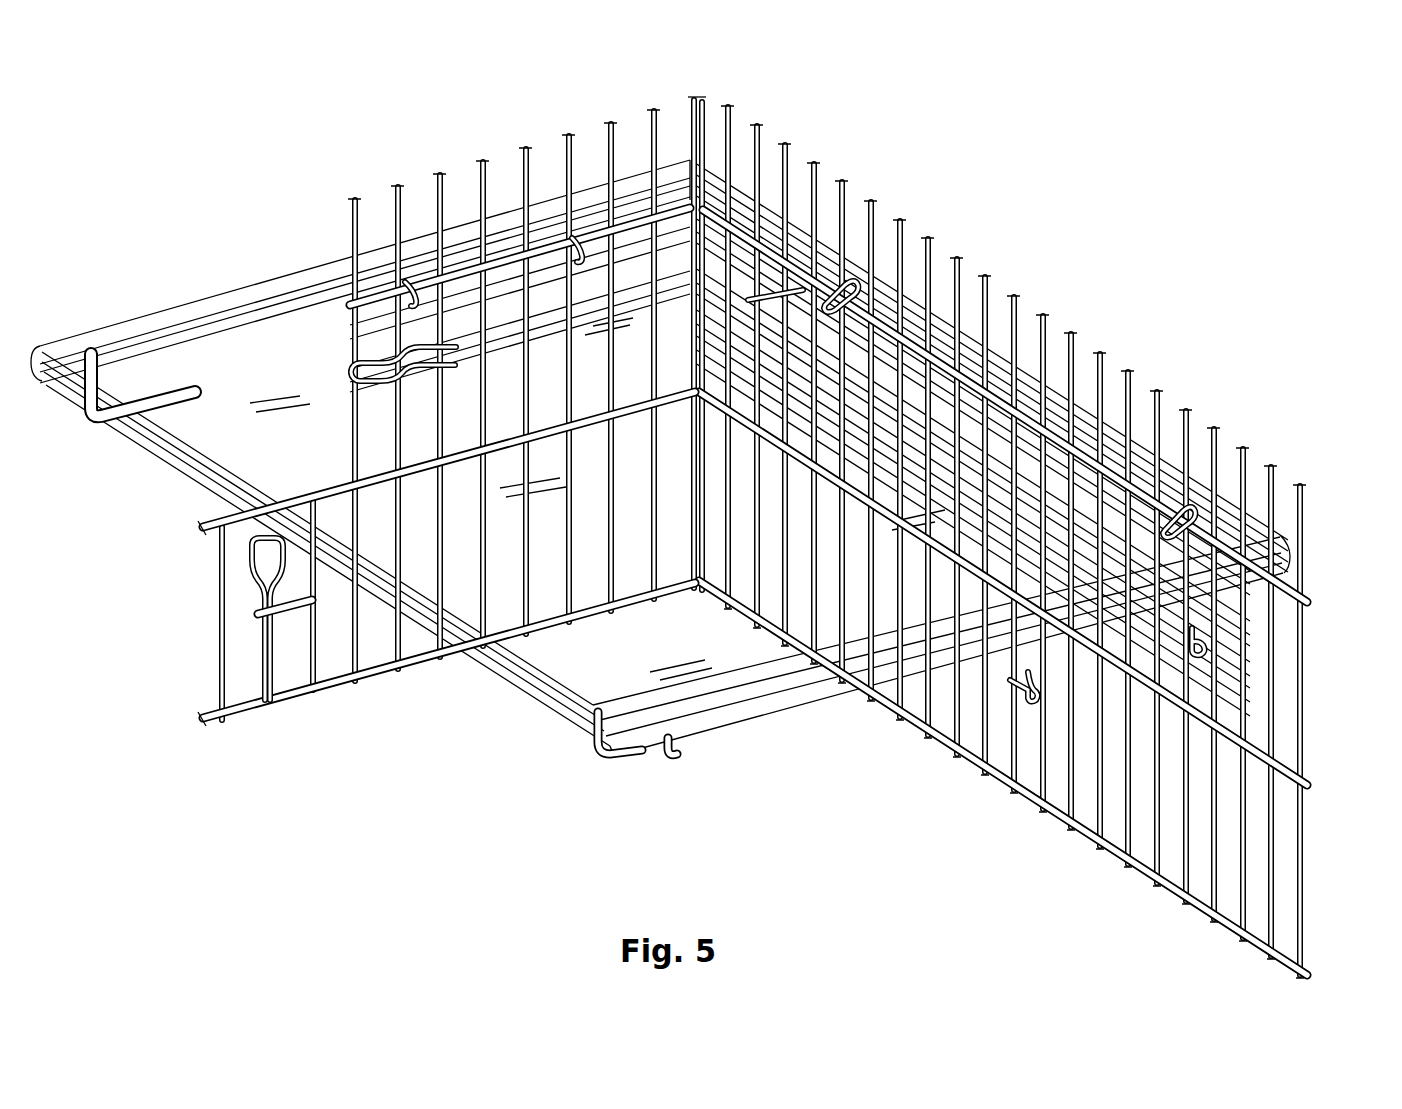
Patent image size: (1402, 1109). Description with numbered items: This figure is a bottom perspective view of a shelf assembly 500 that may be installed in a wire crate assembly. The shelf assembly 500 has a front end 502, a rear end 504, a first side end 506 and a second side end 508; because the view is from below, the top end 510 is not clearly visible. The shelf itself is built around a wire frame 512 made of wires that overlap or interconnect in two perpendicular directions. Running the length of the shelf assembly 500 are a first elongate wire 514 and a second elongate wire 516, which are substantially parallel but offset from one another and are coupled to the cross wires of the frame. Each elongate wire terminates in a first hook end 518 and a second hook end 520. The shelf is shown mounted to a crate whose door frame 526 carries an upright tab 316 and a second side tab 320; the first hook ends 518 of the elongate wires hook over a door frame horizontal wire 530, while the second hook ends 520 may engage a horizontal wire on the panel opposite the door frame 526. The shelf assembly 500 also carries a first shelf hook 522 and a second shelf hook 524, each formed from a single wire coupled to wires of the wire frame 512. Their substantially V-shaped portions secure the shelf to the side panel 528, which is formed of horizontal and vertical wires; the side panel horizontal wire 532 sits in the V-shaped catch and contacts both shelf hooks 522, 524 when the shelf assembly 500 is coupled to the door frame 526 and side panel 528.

The shelf assembly 500 is at (1130, 192).
The front end 502 is at (220, 305).
The rear end 504 is at (790, 712).
The first side end 506 is at (186, 470).
The second side end 508 is at (1000, 362).
The top end 510 is at (152, 310).
The wire frame 512 is at (165, 400).
The first elongate wire 514 is at (465, 295).
The second elongate wire 516 is at (640, 255).
The first hook end 518 is at (352, 300).
The second hook end 520 is at (1205, 645).
The first shelf hook 522 is at (850, 292).
The second shelf hook 524 is at (1192, 505).
The door frame 526 is at (372, 676).
The side panel 528 is at (1300, 815).
The door frame horizontal wire 530 is at (505, 262).
The side panel horizontal wire 532 is at (1285, 585).
The upright tab 316 is at (275, 636).
The second side tab 320 is at (350, 348).